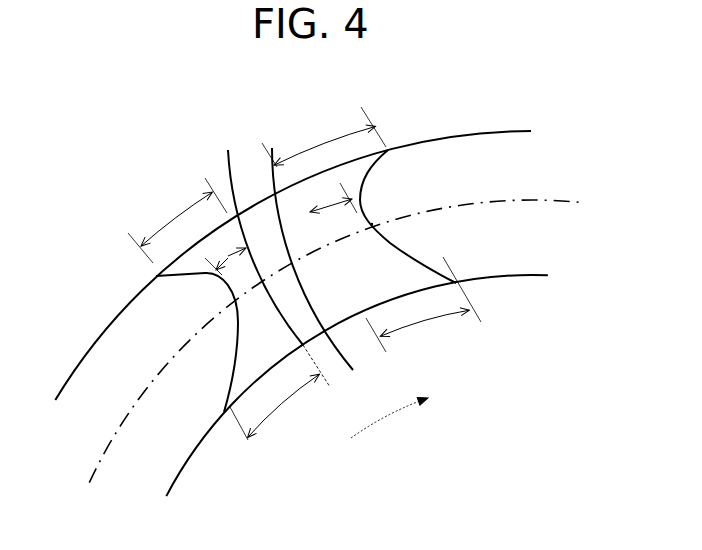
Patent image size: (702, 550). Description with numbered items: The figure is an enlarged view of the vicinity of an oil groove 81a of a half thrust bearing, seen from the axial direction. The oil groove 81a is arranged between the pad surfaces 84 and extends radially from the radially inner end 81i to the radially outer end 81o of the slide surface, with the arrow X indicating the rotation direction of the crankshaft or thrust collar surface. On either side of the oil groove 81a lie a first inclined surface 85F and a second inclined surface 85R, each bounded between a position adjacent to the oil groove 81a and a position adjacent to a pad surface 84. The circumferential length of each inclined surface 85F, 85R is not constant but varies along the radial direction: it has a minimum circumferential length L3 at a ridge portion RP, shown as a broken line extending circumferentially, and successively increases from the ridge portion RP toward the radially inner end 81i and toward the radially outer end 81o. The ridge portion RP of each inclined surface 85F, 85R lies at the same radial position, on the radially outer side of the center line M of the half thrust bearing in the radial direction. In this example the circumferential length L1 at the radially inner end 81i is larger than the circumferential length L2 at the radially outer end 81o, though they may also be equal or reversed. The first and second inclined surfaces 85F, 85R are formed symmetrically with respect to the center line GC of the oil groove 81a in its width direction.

The pad surface 84 is at (446, 152).
The radially outer end 81o is at (489, 133).
The radially inner end 81i is at (543, 275).
The oil groove 81a is at (343, 271).
The first inclined surface 85F is at (427, 270).
The second inclined surface 85R is at (240, 347).
The ridge portion RP is at (225, 289).
The center line of the oil groove GC is at (233, 163).
The center line of the half thrust bearing M is at (113, 435).
The rotation direction X is at (389, 425).
The circumferential length at the radially inner end L1 is at (355, 348).
The circumferential length at the radially outer end L2 is at (257, 185).
The minimum circumferential length L3 is at (281, 229).